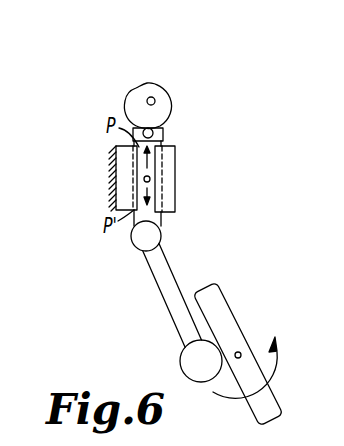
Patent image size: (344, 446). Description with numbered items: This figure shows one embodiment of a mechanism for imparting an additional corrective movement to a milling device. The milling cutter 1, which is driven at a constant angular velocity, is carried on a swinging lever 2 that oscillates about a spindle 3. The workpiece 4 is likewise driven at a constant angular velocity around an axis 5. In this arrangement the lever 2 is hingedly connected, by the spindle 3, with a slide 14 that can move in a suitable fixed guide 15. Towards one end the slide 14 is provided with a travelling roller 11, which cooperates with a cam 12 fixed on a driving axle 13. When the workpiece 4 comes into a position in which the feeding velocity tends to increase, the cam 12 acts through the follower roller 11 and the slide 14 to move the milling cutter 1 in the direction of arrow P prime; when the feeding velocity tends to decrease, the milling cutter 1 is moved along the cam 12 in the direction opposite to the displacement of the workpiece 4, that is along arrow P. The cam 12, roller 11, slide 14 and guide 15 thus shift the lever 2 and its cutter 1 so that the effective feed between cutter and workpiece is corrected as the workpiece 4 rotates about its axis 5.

The milling cutter 1 is at (187, 361).
The lever 2 is at (166, 300).
The spindle 3 is at (140, 243).
The workpiece 4 is at (217, 303).
The axis 5 is at (242, 353).
The travelling roller 11 is at (163, 133).
The cam 12 is at (150, 87).
The driving axle 13 is at (155, 100).
The slide 14 is at (161, 214).
The guide 15 is at (172, 181).